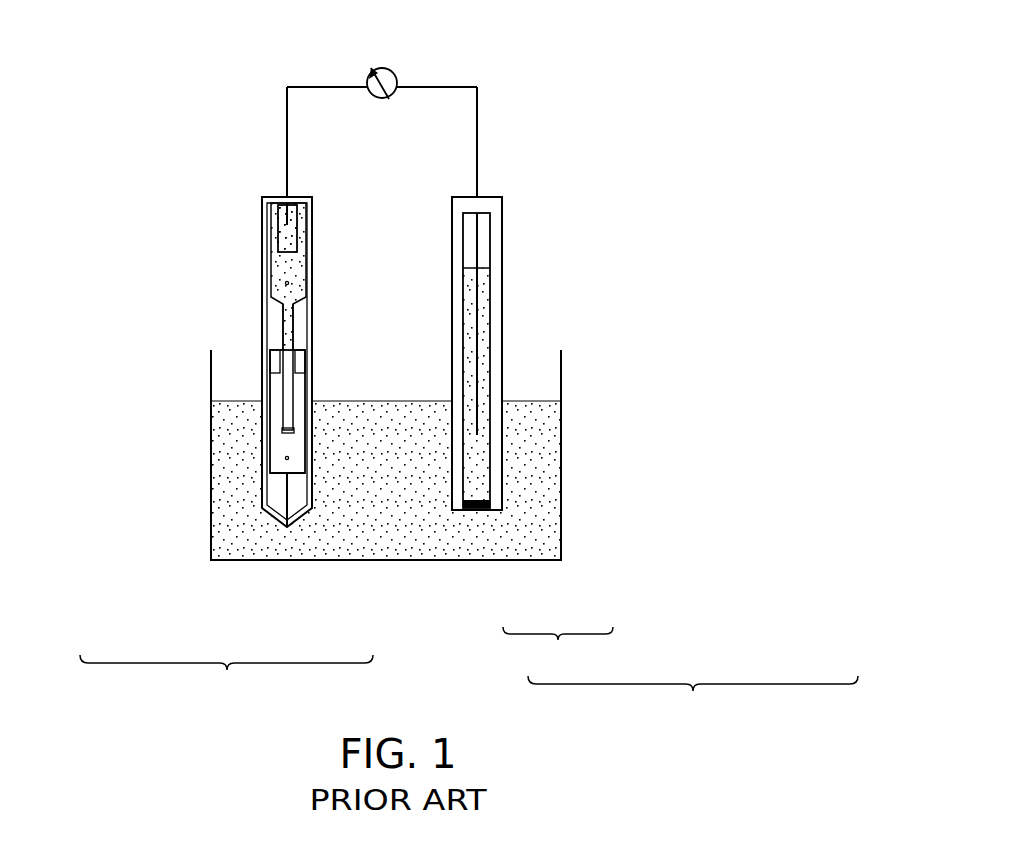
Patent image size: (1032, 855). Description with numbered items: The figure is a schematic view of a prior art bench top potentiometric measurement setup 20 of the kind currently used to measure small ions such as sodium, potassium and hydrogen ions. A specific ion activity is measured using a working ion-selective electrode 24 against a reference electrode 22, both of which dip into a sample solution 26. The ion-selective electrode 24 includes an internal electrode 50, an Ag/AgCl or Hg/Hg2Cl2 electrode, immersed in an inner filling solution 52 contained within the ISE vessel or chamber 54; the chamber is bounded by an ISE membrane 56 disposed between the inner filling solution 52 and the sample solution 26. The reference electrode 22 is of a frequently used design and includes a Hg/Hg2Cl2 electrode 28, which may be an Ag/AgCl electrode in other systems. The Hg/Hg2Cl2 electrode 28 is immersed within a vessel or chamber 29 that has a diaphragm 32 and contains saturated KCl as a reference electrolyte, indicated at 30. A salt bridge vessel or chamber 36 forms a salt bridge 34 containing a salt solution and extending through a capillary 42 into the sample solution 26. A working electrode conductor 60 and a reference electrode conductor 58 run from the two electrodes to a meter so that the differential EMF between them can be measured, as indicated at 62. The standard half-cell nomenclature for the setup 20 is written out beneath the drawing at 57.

The bench top potentiometric measurement setup 20 is at (610, 88).
The reference electrode 22 is at (319, 183).
The ion-selective electrode 24 is at (524, 191).
The sample solution 26 is at (378, 452).
The Hg/Hg2Cl2 electrode 28 is at (285, 230).
The vessel or chamber 29 is at (280, 340).
The saturated KCl reference electrolyte 30 is at (285, 283).
The diaphragm 32 is at (285, 430).
The salt bridge 34 is at (285, 458).
The salt bridge vessel or chamber 36 is at (273, 473).
The capillary 42 is at (287, 502).
The internal electrode 50 is at (478, 303).
The inner filling solution 52 is at (483, 352).
The ISE vessel or chamber 54 is at (488, 383).
The ISE membrane 56 is at (470, 510).
The standard half-cell nomenclature 57 is at (846, 582).
The reference electrode conductor 58 is at (285, 142).
The working electrode conductor 60 is at (478, 157).
The EMF measurement 62 is at (388, 68).